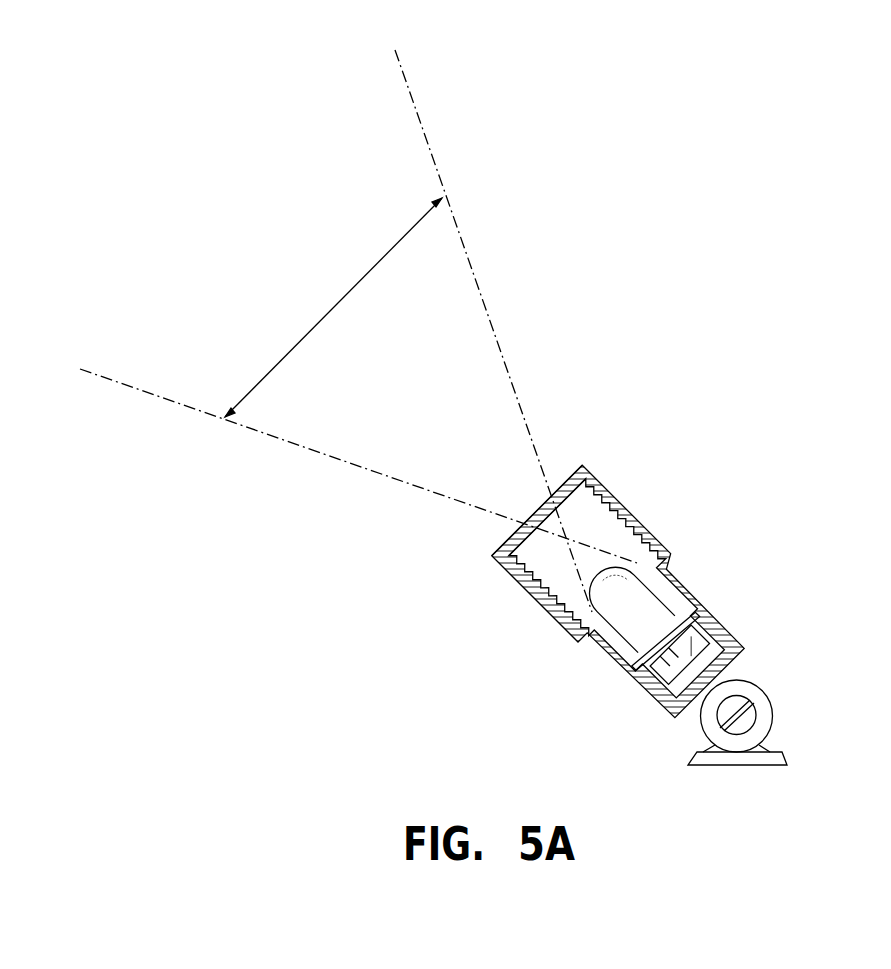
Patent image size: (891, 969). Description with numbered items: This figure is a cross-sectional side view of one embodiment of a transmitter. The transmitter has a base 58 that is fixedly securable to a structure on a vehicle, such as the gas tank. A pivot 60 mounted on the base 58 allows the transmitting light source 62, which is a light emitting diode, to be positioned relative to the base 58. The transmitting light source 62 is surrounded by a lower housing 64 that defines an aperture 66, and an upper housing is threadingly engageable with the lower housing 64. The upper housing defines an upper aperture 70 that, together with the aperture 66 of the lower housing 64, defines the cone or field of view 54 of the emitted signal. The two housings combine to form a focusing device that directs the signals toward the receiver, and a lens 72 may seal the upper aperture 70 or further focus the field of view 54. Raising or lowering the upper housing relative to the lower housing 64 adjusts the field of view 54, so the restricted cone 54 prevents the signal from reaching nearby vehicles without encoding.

The field of view 54 is at (297, 340).
The base 58 is at (692, 762).
The pivot 60 is at (757, 697).
The transmitting light source 62 is at (536, 512).
The lower housing 64 is at (697, 594).
The aperture 66 is at (522, 526).
The upper aperture 70 is at (582, 465).
The lens 72 is at (555, 500).